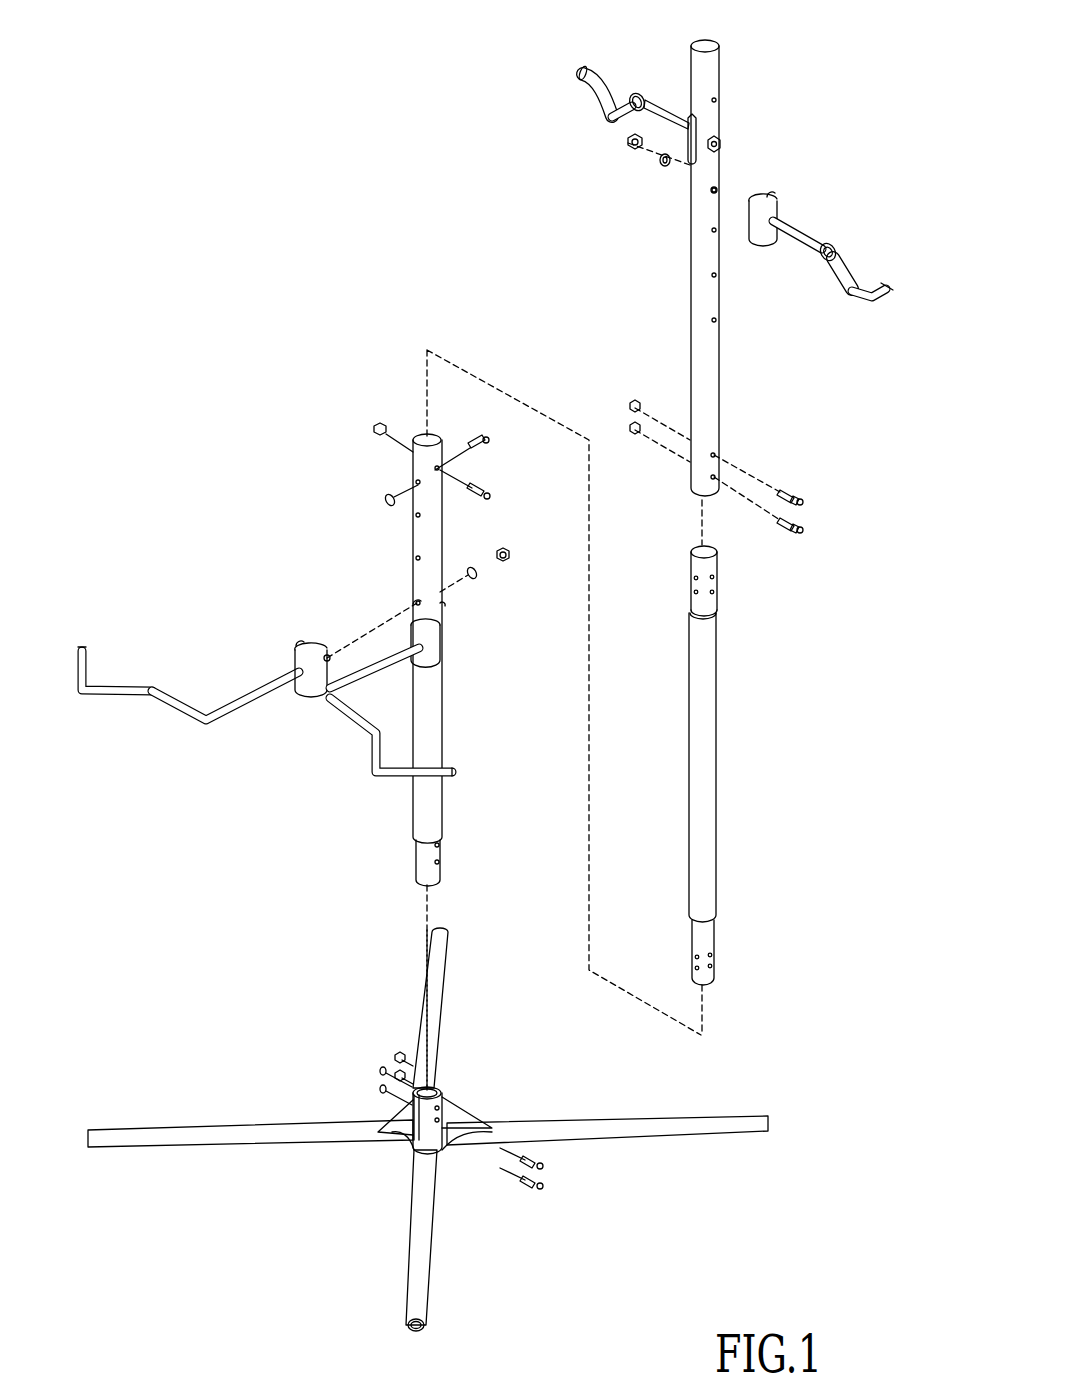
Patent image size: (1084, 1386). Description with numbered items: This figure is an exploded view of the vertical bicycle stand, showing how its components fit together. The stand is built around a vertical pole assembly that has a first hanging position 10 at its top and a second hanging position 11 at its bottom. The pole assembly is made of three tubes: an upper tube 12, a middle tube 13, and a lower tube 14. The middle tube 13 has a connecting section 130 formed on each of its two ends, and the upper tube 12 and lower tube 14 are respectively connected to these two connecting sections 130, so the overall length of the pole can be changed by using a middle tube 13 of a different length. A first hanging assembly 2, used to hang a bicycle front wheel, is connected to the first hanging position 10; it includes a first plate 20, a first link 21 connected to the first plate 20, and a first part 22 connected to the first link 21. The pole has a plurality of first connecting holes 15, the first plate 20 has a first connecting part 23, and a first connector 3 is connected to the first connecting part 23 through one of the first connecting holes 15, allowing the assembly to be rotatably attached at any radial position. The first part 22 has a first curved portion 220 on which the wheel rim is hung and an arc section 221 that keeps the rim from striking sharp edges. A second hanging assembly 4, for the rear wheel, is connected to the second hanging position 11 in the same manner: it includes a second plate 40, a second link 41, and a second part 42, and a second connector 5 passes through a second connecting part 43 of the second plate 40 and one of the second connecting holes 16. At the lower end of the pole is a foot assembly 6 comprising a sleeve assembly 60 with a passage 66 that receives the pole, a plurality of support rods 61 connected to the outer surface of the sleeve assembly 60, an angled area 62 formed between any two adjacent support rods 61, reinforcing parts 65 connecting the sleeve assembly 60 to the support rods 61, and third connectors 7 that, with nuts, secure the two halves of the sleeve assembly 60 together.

The first hanging assembly 2 is at (625, 82).
The first connector 3 is at (627, 143).
The second hanging assembly 4 is at (324, 740).
The second connector 5 is at (510, 562).
The foot assembly 6 is at (300, 1188).
The third connectors 7 is at (578, 1180).
The first hanging position 10 is at (682, 226).
The second hanging position 11 is at (404, 538).
The upper tube 12 is at (712, 362).
The middle tube 13 is at (710, 766).
The lower tube 14 is at (435, 730).
The first connecting holes 15 is at (718, 192).
The second connecting holes 16 is at (422, 604).
The first plate 20 is at (777, 200).
The first link 21 is at (800, 232).
The first part 22 is at (856, 272).
The first connecting part 23 is at (752, 205).
The connecting section 130 is at (718, 588).
The first curved portion 220 is at (860, 292).
The arc section 221 is at (885, 296).
The second plate 40 is at (296, 642).
The second link 41 is at (246, 690).
The second part 42 is at (90, 690).
The second connecting part 43 is at (327, 657).
The sleeve assembly 60 is at (420, 1132).
The support rods 61 is at (675, 1132).
The angled area 62 is at (440, 1184).
The reinforcing parts 65 is at (385, 1118).
The passage 66 is at (445, 1092).